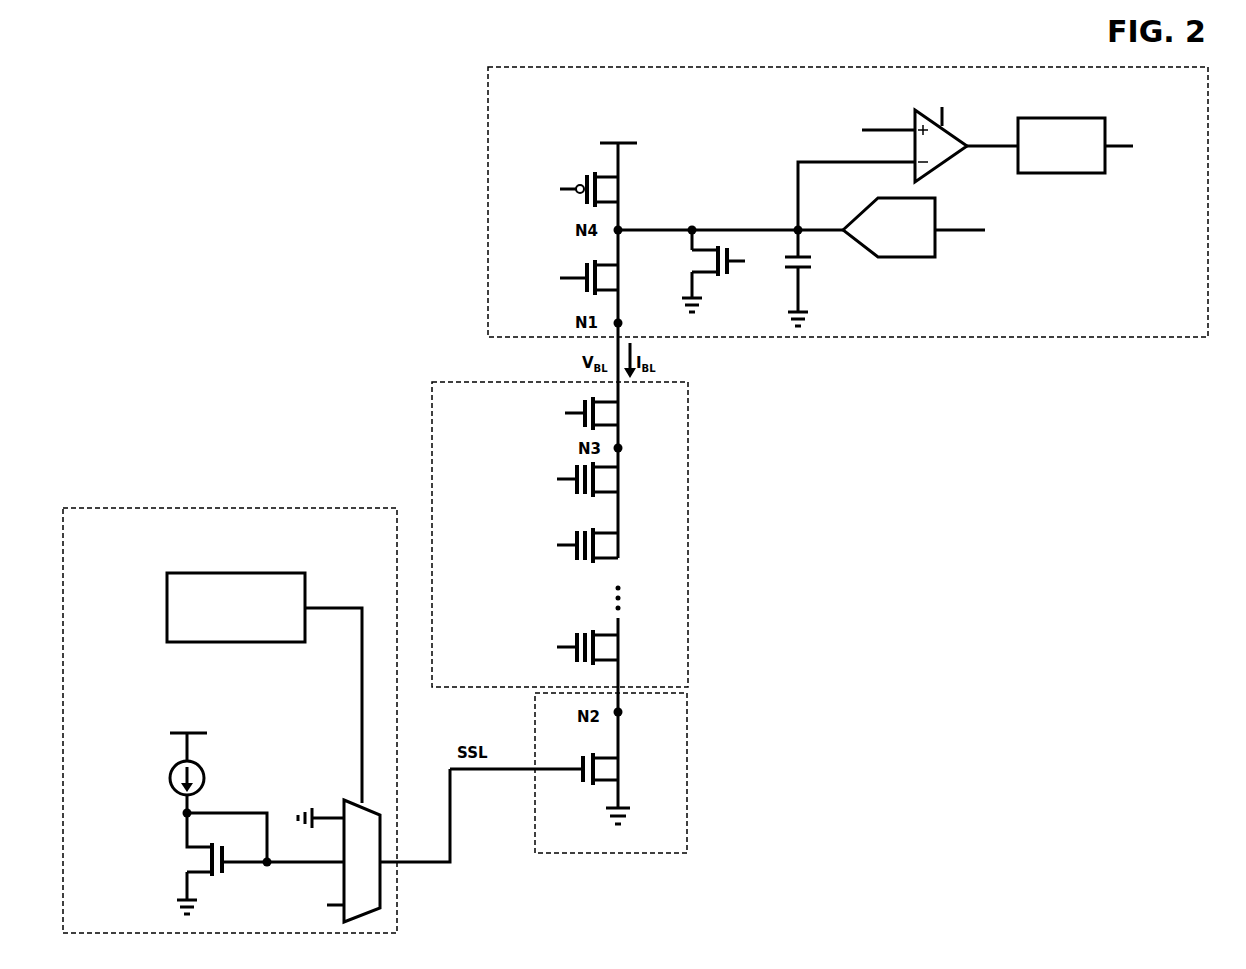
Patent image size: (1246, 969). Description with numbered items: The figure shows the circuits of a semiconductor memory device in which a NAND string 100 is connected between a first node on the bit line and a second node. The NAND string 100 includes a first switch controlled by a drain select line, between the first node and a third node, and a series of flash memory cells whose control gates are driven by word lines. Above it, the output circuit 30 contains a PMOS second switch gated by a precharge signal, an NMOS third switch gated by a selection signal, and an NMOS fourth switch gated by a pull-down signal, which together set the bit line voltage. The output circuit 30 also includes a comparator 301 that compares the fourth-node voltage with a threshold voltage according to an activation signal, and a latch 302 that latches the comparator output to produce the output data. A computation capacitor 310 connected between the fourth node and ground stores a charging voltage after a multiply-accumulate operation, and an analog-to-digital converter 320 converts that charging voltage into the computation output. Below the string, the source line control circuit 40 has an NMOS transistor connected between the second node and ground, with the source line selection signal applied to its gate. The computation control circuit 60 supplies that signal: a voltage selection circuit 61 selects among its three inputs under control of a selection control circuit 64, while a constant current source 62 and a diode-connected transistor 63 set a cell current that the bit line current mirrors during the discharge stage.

The output circuit 30 is at (855, 337).
The source line control circuit 40 is at (687, 768).
The computation control circuit 60 is at (218, 508).
The voltage selection circuit 61 is at (340, 805).
The constant current source 62 is at (170, 770).
The diode-connected transistor 63 is at (180, 850).
The selection control circuit 64 is at (167, 600).
The NAND string 100 is at (432, 422).
The comparator 301 is at (912, 115).
The latch 302 is at (1053, 118).
The computation capacitor 310 is at (823, 260).
The analog-to-digital converter 320 is at (912, 258).